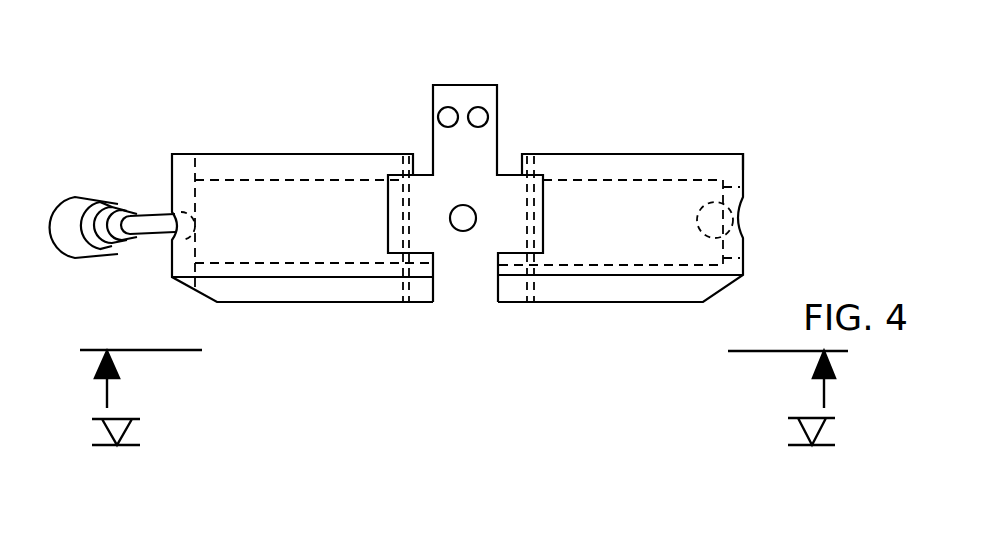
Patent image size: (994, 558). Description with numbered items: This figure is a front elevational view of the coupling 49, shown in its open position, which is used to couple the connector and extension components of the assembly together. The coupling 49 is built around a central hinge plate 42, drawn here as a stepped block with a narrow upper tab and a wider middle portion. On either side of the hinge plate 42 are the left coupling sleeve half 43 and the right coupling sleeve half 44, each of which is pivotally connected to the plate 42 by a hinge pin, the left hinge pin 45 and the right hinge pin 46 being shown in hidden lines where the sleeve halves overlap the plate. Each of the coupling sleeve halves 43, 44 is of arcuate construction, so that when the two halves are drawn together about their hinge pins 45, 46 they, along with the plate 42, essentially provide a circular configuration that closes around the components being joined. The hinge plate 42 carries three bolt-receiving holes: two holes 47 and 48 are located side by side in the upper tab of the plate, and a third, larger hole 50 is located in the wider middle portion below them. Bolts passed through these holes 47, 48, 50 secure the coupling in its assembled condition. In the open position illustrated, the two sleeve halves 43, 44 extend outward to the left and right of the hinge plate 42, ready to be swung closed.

The hinge plate 42 is at (478, 158).
The left coupling sleeve half 43 is at (257, 165).
The right coupling sleeve half 44 is at (682, 162).
The hinge pin 45 is at (400, 150).
The hinge pin 46 is at (527, 153).
The bolt-receiving hole 47 is at (448, 112).
The bolt-receiving hole 48 is at (478, 117).
The coupling 49 is at (745, 177).
The bolt-receiving hole 50 is at (465, 220).